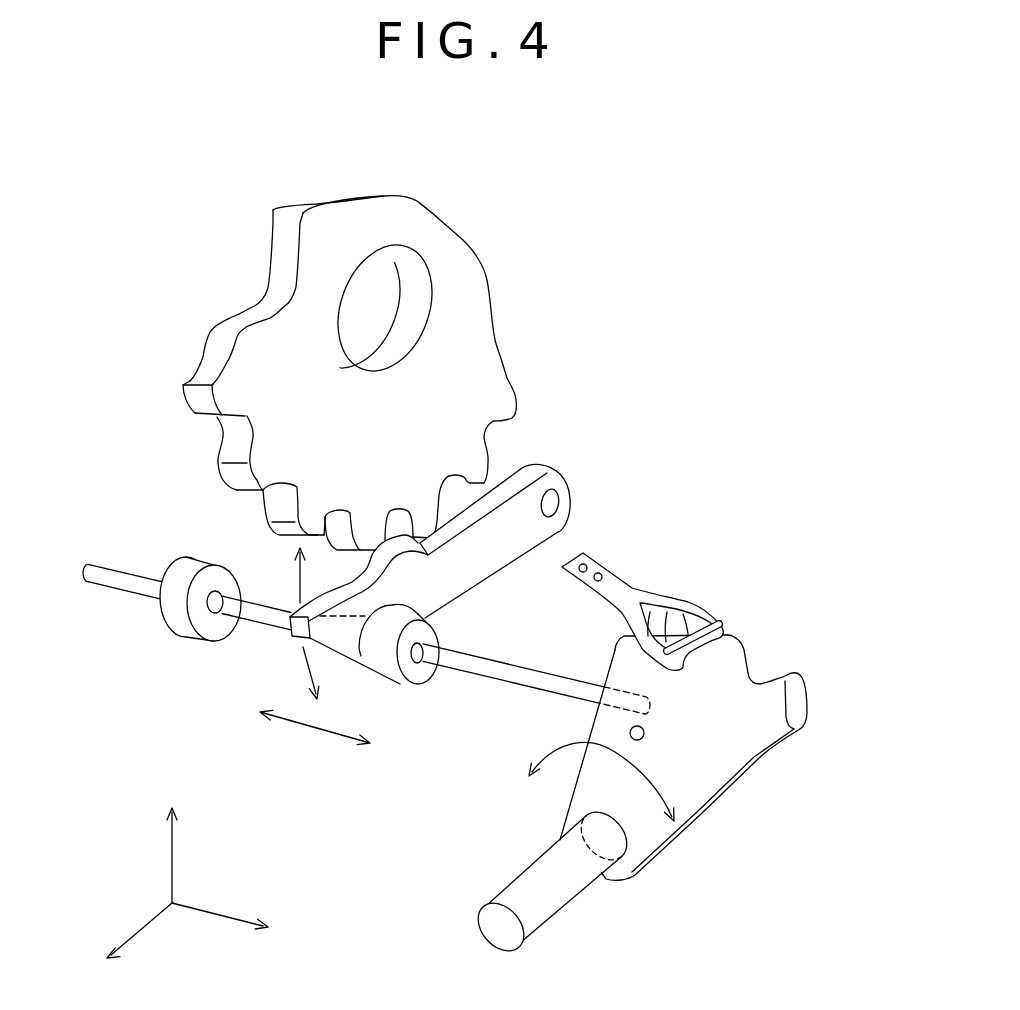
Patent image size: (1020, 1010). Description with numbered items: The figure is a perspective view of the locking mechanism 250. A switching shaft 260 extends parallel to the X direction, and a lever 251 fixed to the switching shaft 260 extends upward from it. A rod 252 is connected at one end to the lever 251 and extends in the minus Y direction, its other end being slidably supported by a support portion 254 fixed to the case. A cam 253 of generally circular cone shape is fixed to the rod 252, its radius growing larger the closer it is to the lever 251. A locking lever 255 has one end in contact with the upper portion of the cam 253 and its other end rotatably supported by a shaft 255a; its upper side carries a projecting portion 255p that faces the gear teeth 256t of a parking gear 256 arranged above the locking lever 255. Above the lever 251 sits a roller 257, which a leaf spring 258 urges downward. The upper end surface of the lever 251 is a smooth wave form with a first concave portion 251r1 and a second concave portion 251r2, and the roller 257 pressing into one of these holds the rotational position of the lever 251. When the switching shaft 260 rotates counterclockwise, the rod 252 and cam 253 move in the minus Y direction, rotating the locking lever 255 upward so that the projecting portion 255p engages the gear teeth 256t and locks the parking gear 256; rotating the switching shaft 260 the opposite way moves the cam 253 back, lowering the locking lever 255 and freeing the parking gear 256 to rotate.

The locking mechanism 250 is at (480, 591).
The lever 251 is at (718, 723).
The first concave portion 251r1 is at (687, 664).
The second concave portion 251r2 is at (769, 666).
The rod 252 is at (527, 683).
The cam 253 is at (353, 640).
The support portion 254 is at (183, 623).
The locking lever 255 is at (477, 587).
The shaft 255a is at (553, 505).
The projecting portion 255p is at (398, 555).
The parking gear 256 is at (363, 373).
The gear teeth 256t is at (212, 487).
The roller 257 is at (697, 600).
The leaf spring 258 is at (633, 590).
The switching shaft 260 is at (547, 890).